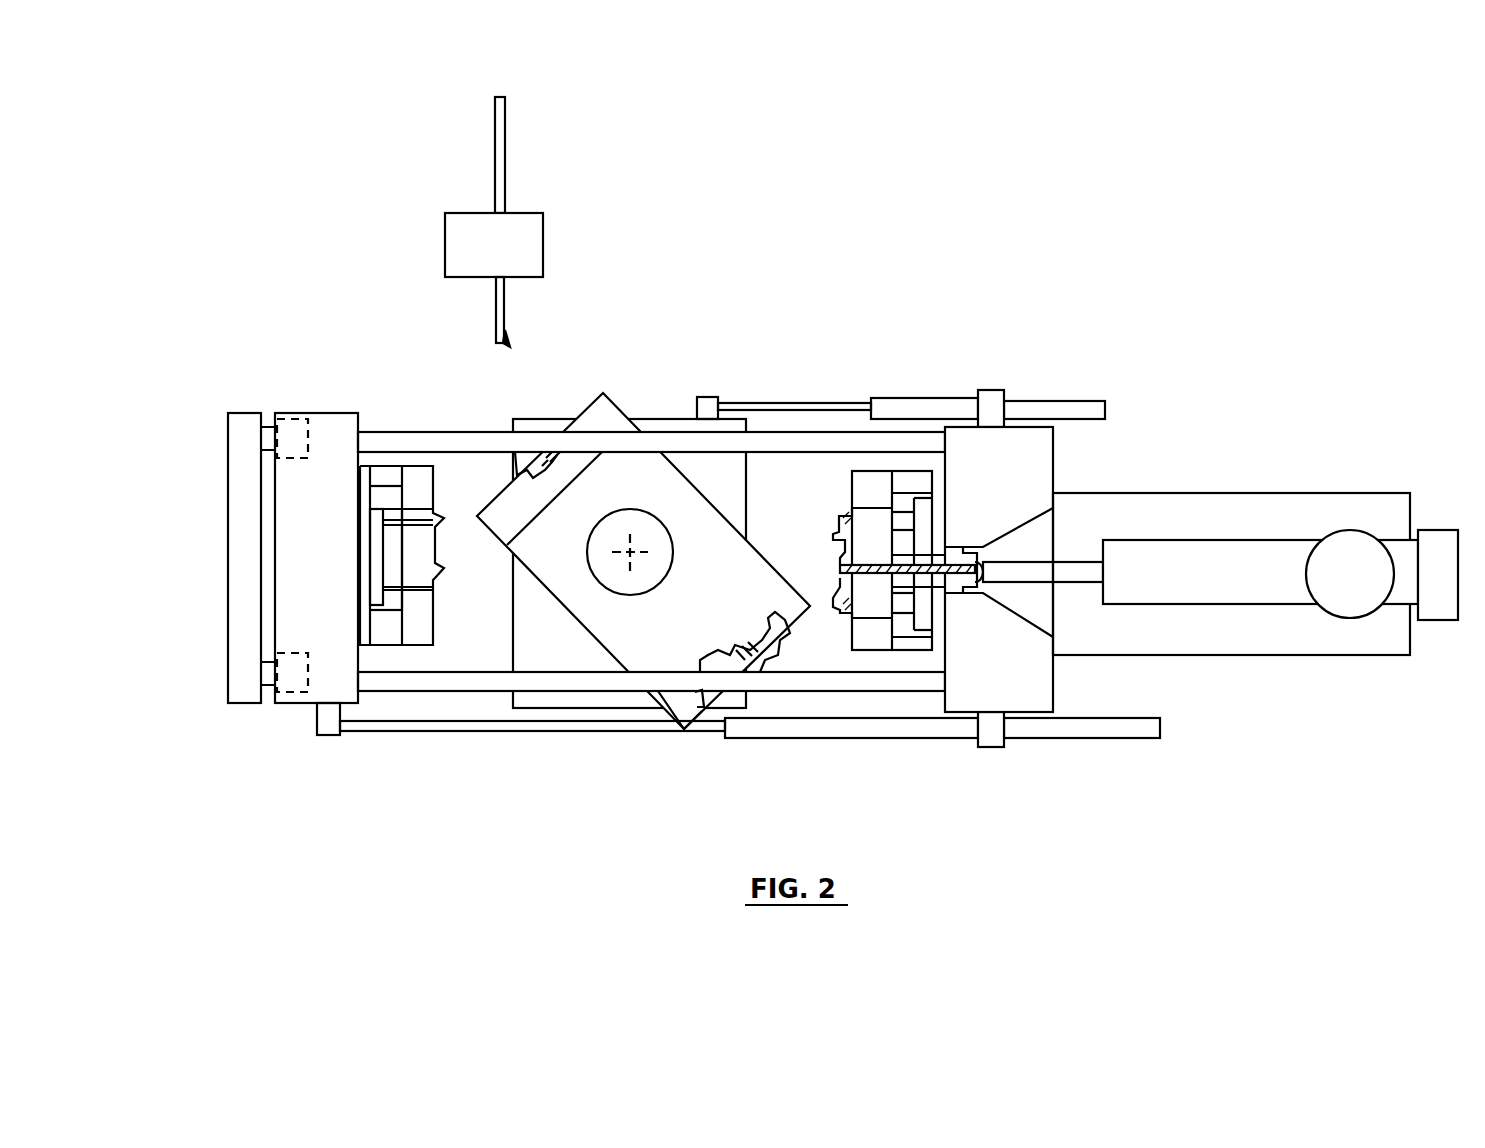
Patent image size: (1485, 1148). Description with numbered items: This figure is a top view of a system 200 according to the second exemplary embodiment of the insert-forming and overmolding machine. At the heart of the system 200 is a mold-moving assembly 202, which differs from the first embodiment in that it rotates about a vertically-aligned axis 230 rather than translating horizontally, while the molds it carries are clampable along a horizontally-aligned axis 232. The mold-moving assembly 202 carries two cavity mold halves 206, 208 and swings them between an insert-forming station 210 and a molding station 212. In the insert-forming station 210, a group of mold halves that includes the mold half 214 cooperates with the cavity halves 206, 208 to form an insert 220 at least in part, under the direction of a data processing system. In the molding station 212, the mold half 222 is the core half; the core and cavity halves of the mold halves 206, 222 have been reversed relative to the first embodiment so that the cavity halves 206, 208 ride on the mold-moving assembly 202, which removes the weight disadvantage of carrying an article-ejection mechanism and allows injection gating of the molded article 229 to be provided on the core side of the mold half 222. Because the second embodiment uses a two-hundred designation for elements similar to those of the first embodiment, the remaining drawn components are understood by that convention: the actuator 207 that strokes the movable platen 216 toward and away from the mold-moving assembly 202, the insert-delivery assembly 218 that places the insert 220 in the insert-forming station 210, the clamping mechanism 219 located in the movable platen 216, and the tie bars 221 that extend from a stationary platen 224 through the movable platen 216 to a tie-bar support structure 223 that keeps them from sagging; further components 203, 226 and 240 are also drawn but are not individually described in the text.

The system 200 is at (1205, 300).
The mold-moving assembly 202 is at (637, 523).
The upper slide block 203 is at (912, 408).
The mold half 206 is at (683, 712).
The lower slide block 207 is at (955, 733).
The mold half 208 is at (497, 523).
The insert-forming station 210 is at (452, 398).
The molding station 212 is at (812, 385).
The mold half 214 is at (427, 627).
The support plate 216 is at (333, 432).
The cutting tool 218 is at (465, 222).
The sensor 219 is at (291, 437).
The insert 220 is at (522, 468).
The guide rod 221 is at (384, 442).
The mold half 222 is at (873, 638).
The base plate 223 is at (247, 473).
The drive housing 224 is at (1030, 440).
The motor 226 is at (1214, 508).
The article 229 is at (750, 647).
The vertically-aligned axis 230 is at (408, 588).
The horizontally-aligned axis 232 is at (375, 588).
The frame 240 is at (669, 443).